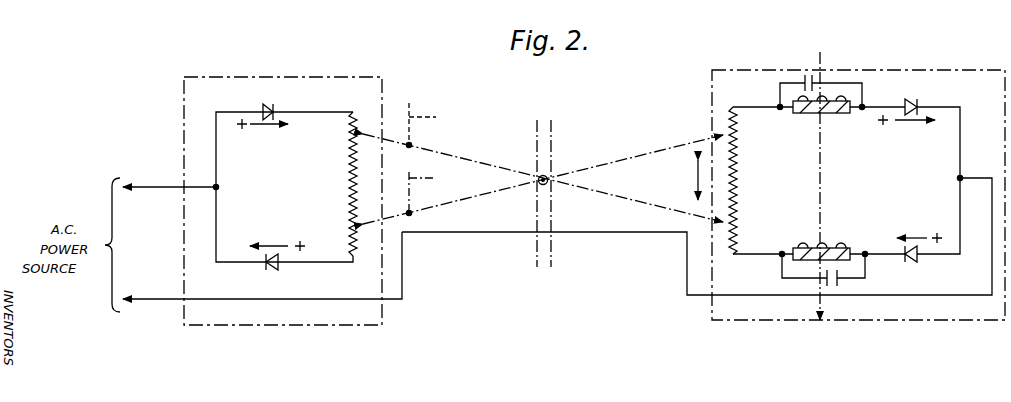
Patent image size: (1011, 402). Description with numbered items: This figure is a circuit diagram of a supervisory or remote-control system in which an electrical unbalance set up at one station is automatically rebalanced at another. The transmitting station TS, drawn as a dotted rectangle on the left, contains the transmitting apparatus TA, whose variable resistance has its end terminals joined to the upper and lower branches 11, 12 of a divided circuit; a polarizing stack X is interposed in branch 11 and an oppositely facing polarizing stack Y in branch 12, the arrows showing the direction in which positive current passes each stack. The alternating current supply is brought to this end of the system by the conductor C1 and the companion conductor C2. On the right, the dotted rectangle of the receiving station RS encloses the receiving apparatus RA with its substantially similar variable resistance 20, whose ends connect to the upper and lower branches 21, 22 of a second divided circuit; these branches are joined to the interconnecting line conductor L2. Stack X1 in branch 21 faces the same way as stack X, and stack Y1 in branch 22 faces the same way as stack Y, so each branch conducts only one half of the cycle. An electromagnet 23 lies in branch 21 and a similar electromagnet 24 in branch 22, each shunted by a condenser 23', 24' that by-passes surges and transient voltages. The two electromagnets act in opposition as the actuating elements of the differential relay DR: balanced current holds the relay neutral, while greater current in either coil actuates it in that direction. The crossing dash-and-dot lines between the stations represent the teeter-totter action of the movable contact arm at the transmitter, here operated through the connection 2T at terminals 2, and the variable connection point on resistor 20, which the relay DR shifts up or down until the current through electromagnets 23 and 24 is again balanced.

The pickup/transmission coupling lines 2 is at (368, 132).
The pickup terminals 2T is at (433, 159).
The upper branch 11 is at (343, 111).
The lower branch 12 is at (320, 262).
The variable resistance 20 is at (740, 186).
The upper branch 21 is at (757, 106).
The lower branch 22 is at (741, 256).
The electromagnet 23 is at (820, 124).
The condenser 23' is at (814, 74).
The electromagnet 24 is at (825, 237).
The condenser 24' is at (829, 287).
The transmitting station TS is at (283, 186).
The transmitting apparatus TA is at (284, 187).
The receiving station RS is at (858, 180).
The receiving apparatus RA is at (846, 180).
The polarizing stack X is at (268, 106).
The polarizing stack Y is at (270, 268).
The polarizing stack X1 is at (912, 100).
The polarizing stack Y1 is at (915, 260).
The conductor C1 is at (171, 187).
The power conductor C2 is at (262, 265).
The interconnecting line conductor L2 is at (493, 232).
The differential relay DR is at (817, 302).